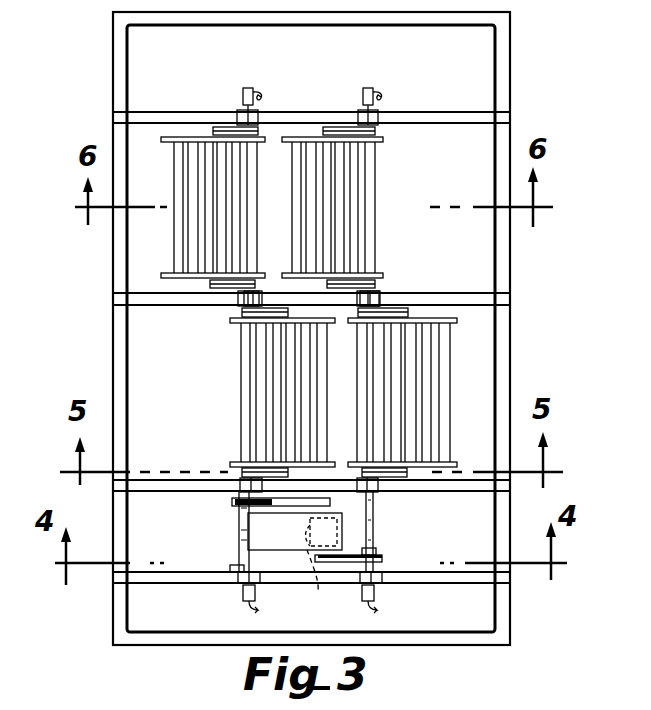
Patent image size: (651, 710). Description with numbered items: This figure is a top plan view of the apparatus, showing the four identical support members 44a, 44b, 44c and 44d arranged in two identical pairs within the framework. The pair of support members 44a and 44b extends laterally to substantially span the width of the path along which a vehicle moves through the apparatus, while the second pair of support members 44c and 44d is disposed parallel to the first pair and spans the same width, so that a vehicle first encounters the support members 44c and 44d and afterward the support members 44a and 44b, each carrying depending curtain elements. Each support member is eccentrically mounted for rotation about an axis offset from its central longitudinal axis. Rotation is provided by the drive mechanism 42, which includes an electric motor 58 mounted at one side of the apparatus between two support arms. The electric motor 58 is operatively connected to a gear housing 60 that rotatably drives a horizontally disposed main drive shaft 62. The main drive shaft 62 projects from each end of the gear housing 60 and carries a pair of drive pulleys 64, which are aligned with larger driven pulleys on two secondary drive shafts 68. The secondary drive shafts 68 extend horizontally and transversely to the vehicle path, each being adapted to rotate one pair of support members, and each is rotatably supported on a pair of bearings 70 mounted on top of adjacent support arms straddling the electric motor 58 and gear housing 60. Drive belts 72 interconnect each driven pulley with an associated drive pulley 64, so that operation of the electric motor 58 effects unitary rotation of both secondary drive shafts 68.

The drive mechanism 42 is at (299, 586).
The support member 44a is at (231, 391).
The support member 44b is at (165, 232).
The support member 44c is at (475, 374).
The support member 44d is at (396, 194).
The electric motor 58 is at (270, 533).
The gear housing 60 is at (318, 586).
The main drive shaft 62 is at (345, 528).
The drive pulley 64 is at (332, 501).
The secondary drive shaft 68 is at (237, 561).
The bearing 70 is at (240, 480).
The drive belt 72 is at (257, 517).